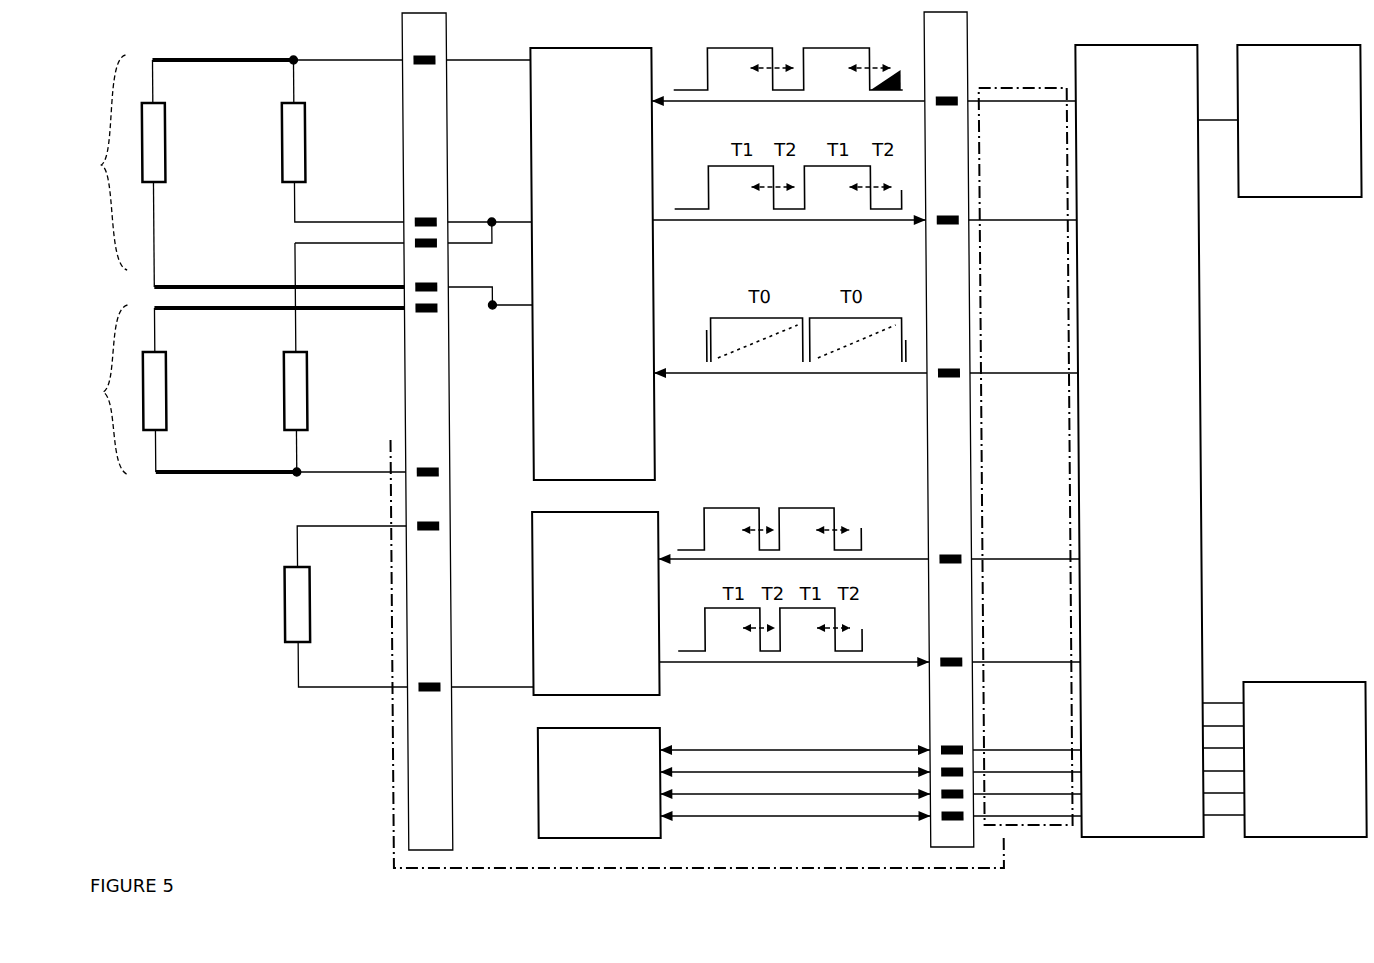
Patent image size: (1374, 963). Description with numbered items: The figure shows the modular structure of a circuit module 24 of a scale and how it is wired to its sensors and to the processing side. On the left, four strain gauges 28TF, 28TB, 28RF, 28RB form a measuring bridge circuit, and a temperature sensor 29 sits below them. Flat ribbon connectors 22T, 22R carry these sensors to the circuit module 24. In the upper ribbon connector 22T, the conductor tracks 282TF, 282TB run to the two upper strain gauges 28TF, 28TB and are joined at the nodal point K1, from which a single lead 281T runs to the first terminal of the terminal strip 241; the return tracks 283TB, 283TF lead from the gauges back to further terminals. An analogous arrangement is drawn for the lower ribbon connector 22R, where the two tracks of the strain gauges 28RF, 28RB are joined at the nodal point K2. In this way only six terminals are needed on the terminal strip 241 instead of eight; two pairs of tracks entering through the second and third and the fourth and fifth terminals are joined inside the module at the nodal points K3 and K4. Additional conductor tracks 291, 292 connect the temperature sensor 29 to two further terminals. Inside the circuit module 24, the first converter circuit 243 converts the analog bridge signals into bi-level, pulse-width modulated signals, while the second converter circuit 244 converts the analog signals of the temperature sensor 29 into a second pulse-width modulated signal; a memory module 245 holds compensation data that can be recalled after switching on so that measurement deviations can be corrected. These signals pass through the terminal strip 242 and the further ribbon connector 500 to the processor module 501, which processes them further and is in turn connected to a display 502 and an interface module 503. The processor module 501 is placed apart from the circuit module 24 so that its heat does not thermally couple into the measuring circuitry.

The terminal strip 241 is at (440, 37).
The terminal strip 242 is at (969, 27).
The first converter circuit 243 is at (592, 264).
The second converter circuit 244 is at (595, 603).
The memory module 245 is at (599, 783).
The circuit module 24 is at (395, 822).
The further ribbon connector 500 is at (1003, 87).
The processor module 501 is at (1139, 441).
The display 502 is at (1279, 121).
The interface module 503 is at (1284, 759).
The flat ribbon connector 22T is at (229, 147).
The receive sensor 22R is at (231, 390).
The strain gauge 28TF is at (177, 142).
The strain gauge 28TB is at (316, 142).
The receive front resistor 28RF is at (179, 391).
The receive back resistor 28RB is at (319, 391).
The single lead 281T is at (363, 57).
The conductor track 282TF is at (165, 67).
The back lead 282TB is at (297, 80).
The back return lead 283TB is at (297, 212).
The front return lead 283TF is at (160, 273).
The temperature sensor 29 is at (280, 604).
The additional conductor track 291 is at (293, 535).
The additional conductor track 292 is at (297, 673).
The nodal point K1 is at (274, 42).
The nodal point K2 is at (329, 455).
The nodal point K3 is at (487, 206).
The nodal point K4 is at (488, 322).